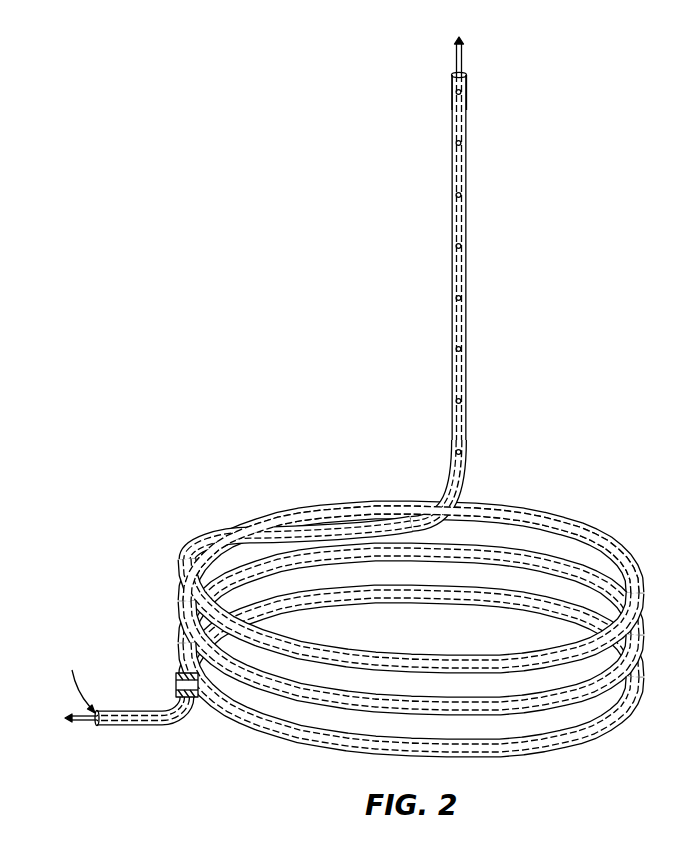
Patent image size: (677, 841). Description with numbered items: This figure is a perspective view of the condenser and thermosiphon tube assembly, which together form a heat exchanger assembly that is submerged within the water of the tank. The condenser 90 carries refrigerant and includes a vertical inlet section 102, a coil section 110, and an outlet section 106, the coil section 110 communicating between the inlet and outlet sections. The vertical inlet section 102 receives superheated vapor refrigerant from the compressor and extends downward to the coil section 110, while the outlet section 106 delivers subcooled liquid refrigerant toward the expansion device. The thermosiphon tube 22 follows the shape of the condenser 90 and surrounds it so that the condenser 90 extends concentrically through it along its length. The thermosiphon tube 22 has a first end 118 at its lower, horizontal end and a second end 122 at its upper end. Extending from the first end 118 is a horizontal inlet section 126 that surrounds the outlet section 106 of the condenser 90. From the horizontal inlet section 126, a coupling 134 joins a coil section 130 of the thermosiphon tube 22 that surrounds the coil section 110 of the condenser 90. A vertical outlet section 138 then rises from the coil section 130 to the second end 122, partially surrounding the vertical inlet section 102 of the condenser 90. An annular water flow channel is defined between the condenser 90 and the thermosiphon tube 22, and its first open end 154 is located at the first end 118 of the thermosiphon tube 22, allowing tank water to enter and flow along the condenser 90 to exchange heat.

The condenser 90 is at (456, 62).
The vertical inlet section 102 is at (463, 46).
The second end 122 is at (467, 74).
The vertical outlet section 138 is at (467, 213).
The thermosiphon tube 22 is at (360, 298).
The coil section 130 is at (411, 392).
The coil section 110 is at (578, 530).
The coupling 134 is at (173, 684).
The first open end 154 is at (77, 681).
The outlet section 106 is at (80, 727).
The first end 118 is at (98, 727).
The horizontal inlet section 126 is at (173, 726).